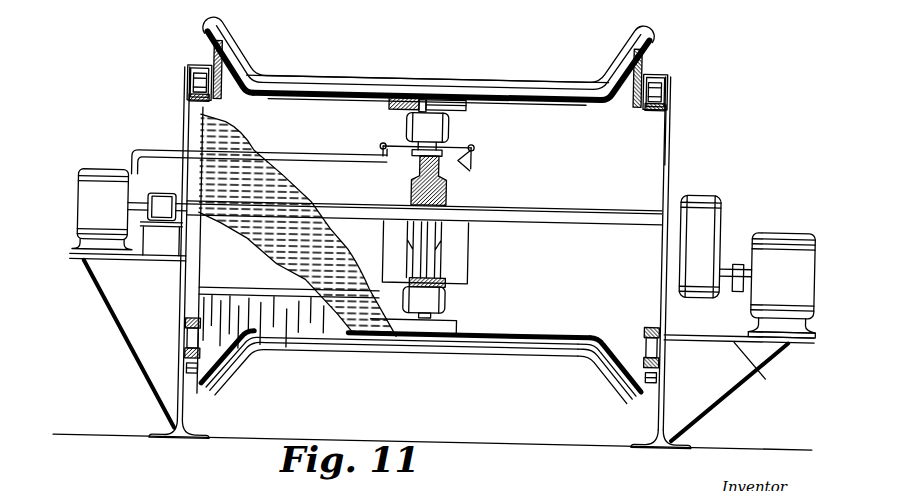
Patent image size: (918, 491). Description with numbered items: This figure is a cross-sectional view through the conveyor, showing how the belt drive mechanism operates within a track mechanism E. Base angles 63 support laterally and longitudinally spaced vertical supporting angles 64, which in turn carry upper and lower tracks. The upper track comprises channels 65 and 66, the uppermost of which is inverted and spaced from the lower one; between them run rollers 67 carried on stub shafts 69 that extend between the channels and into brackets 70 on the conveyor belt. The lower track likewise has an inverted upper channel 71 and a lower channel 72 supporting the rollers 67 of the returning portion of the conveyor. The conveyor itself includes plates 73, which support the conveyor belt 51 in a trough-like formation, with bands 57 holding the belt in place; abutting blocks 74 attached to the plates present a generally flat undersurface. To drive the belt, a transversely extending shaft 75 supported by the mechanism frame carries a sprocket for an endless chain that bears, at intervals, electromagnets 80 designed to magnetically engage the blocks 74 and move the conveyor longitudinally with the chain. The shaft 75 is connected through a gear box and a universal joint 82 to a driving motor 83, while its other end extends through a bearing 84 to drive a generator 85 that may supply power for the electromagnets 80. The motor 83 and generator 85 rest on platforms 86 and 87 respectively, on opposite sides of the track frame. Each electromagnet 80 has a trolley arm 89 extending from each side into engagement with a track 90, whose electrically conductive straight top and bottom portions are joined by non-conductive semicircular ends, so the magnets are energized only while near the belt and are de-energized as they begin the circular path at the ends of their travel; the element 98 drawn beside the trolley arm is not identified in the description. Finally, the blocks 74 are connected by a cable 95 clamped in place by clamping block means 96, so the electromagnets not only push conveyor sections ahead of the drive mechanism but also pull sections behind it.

The conveyor belt 51 is at (377, 91).
The bands 57 is at (420, 90).
The base angles 63 is at (165, 418).
The vertical supporting angles 64 is at (183, 289).
The channel 65 is at (186, 67).
The channel 66 is at (187, 99).
The rollers 67 is at (726, 60).
The stub shafts 69 is at (222, 91).
The brackets 70 is at (240, 71).
The upper channel 71 is at (186, 312).
The lower channel 72 is at (185, 368).
The plates 73 is at (506, 103).
The abutting blocks 74 is at (461, 98).
The shaft 75 is at (579, 211).
The electromagnets 80 is at (425, 127).
The universal joint 82 is at (743, 264).
The driving motor 83 is at (797, 241).
The bearing 84 is at (160, 204).
The generator 85 is at (90, 211).
The platform 86 is at (745, 354).
The platform 87 is at (117, 265).
The trolley arm 89 is at (380, 146).
The track 90 is at (460, 160).
The cable 95 is at (432, 96).
The clamping block means 96 is at (388, 105).
The bracket 98 is at (395, 151).
The track mechanism E is at (672, 130).